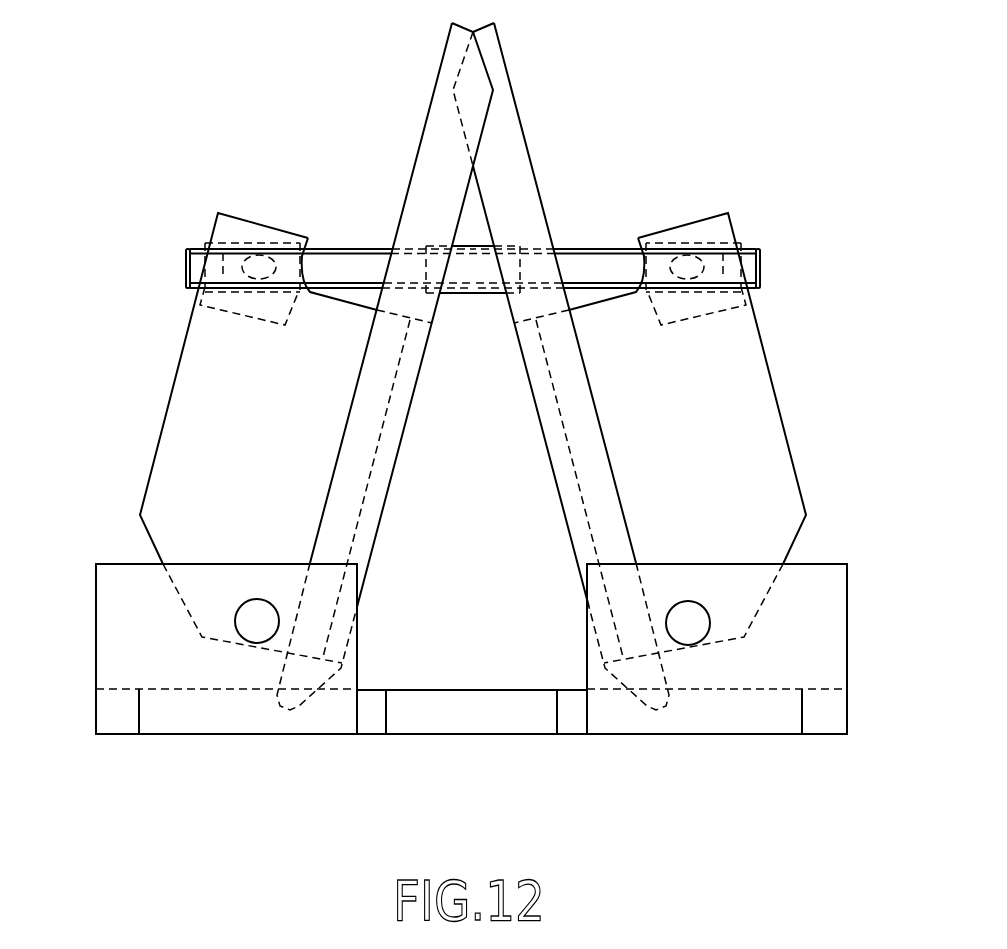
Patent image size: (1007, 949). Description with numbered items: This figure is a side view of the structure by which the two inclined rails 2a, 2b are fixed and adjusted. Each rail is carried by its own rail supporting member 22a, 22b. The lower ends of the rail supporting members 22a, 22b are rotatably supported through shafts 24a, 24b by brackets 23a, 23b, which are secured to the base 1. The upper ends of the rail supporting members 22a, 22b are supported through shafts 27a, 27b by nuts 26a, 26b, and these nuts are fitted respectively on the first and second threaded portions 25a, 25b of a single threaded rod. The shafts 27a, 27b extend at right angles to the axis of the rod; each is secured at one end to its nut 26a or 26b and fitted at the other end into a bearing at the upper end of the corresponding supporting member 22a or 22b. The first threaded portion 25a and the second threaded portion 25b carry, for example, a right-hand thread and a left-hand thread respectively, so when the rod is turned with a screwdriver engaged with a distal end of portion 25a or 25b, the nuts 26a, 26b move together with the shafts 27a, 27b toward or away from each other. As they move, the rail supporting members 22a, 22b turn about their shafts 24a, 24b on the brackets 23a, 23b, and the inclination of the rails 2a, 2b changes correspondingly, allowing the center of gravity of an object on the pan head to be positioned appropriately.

The base 1 is at (847, 713).
The inclined rail 2a is at (512, 95).
The inclined rail 2b is at (434, 94).
The rail supporting member 22a is at (764, 400).
The rail supporting member 22b is at (186, 398).
The bracket 23a is at (822, 645).
The bracket 23b is at (123, 641).
The shaft 24a is at (702, 622).
The shaft 24b is at (237, 613).
The first threaded portion 25a is at (612, 249).
The second threaded portion 25b is at (352, 248).
The nut 26a is at (692, 236).
The nut 26b is at (258, 242).
The shaft 27a is at (764, 268).
The shaft 27b is at (186, 266).